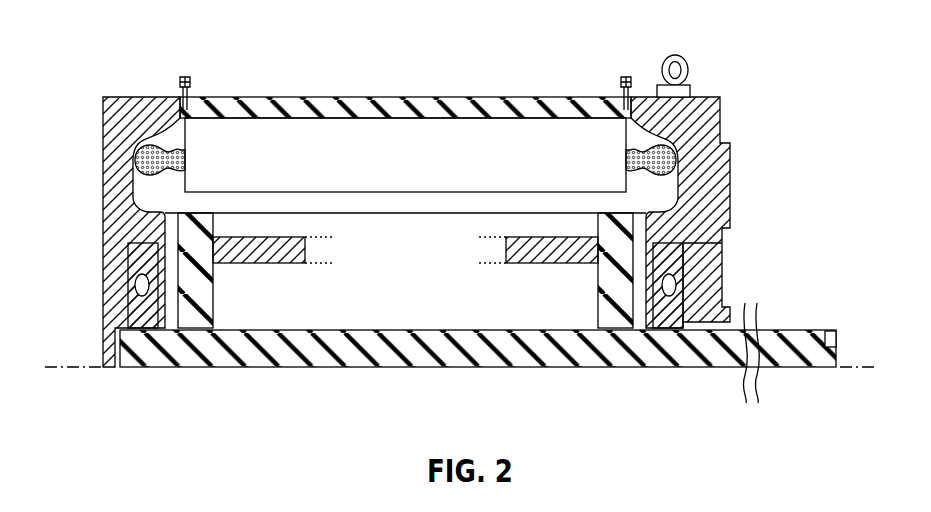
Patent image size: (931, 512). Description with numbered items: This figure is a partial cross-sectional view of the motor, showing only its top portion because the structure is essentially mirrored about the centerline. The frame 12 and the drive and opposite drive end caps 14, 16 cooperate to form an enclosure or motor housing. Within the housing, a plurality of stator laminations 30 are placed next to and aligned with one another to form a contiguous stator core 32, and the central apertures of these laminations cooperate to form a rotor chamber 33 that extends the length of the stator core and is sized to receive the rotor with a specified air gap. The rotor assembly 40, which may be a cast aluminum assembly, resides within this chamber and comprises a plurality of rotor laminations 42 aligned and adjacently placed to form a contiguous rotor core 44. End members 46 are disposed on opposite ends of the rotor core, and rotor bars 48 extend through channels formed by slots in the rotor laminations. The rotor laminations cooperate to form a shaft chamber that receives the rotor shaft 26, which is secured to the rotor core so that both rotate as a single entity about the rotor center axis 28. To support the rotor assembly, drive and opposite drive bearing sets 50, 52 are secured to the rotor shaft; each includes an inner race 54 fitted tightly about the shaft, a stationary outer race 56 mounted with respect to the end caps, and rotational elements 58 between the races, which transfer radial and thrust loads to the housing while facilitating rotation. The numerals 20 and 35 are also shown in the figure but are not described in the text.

The frame 12 is at (258, 97).
The drive end cap 14 is at (733, 98).
The opposite drive end cap 16 is at (110, 97).
The eye bolt 20 is at (688, 62).
The rotor shaft 26 is at (836, 347).
The rotor center axis 28 is at (62, 368).
The stator laminations 30 is at (230, 118).
The stator core 32 is at (455, 148).
The rotor chamber 33 is at (620, 203).
The right seal 35 is at (650, 142).
The rotor assembly 40 is at (448, 285).
The rotor laminations 42 is at (243, 330).
The rotor core 44 is at (330, 331).
The end members 46 is at (190, 320).
The rotor bars 48 is at (295, 237).
The drive bearing set 50 is at (130, 290).
The opposite drive bearing set 52 is at (687, 307).
The inner race 54 is at (138, 330).
The outer race 56 is at (142, 255).
The rotational elements 58 is at (138, 287).